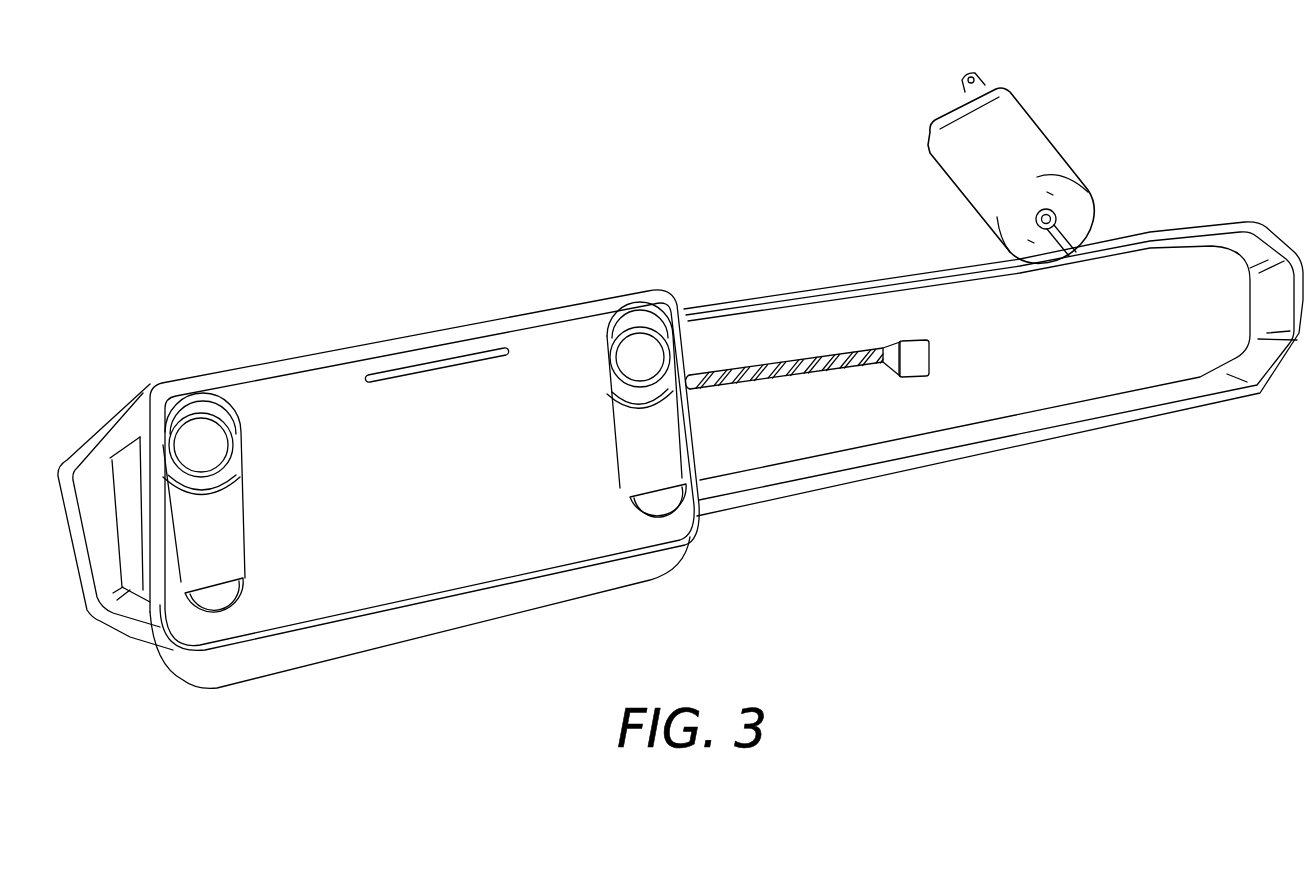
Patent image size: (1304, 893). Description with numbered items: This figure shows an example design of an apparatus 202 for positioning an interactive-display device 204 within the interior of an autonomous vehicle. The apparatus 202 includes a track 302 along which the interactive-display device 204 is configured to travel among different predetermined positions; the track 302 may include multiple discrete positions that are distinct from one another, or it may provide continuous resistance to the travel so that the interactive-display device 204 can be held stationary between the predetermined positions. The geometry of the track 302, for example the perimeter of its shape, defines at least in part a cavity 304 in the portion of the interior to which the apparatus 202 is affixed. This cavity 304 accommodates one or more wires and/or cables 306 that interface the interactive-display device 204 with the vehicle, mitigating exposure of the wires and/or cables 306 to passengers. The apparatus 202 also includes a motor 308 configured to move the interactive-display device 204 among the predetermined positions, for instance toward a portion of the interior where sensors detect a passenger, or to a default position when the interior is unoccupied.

The apparatus 202 is at (726, 105).
The interactive-display device 204 is at (428, 492).
The track 302 is at (1203, 224).
The cavity 304 is at (1091, 361).
The wires and/or cables 306 is at (815, 352).
The motor 308 is at (1015, 161).